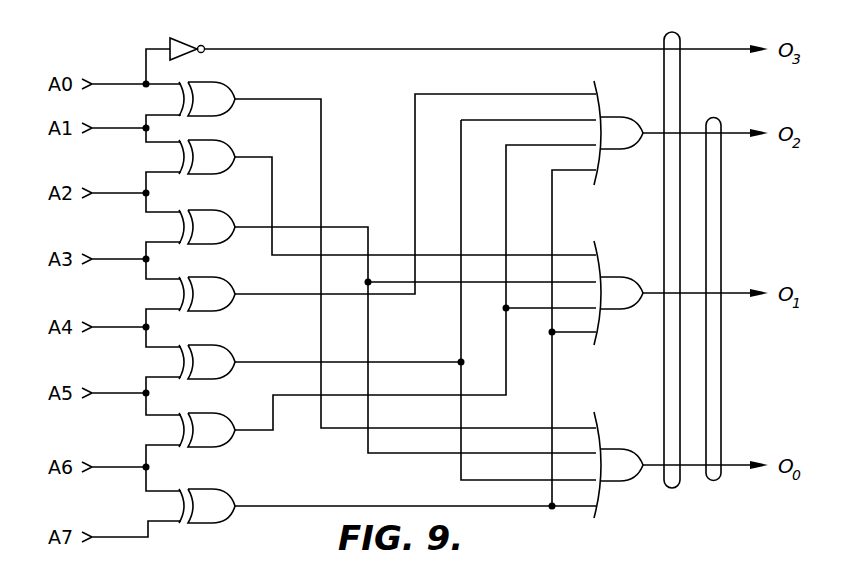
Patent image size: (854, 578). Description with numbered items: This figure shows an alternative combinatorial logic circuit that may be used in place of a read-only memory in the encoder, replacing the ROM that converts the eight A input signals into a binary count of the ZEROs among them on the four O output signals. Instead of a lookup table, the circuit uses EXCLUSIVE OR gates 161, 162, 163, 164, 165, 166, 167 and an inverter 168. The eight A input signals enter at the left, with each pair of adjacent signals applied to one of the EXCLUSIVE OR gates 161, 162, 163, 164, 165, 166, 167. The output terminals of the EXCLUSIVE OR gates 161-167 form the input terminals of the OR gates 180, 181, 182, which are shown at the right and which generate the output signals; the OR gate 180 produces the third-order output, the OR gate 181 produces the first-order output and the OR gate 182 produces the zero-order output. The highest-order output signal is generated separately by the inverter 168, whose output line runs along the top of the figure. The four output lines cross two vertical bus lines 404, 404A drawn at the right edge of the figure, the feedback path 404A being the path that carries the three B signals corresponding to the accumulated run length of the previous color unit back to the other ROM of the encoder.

The EXCLUSIVE OR gate 161 is at (232, 90).
The EXCLUSIVE OR gate 162 is at (232, 148).
The EXCLUSIVE OR gate 163 is at (218, 210).
The EXCLUSIVE OR gate 164 is at (220, 280).
The EXCLUSIVE OR gate 165 is at (230, 347).
The EXCLUSIVE OR gate 166 is at (221, 414).
The EXCLUSIVE OR gate 167 is at (223, 492).
The inverter 168 is at (182, 36).
The OR gate 180 is at (608, 116).
The OR gate 181 is at (608, 278).
The OR gate 182 is at (610, 450).
The output bus line 404 is at (676, 32).
The feedback path 404A is at (717, 119).